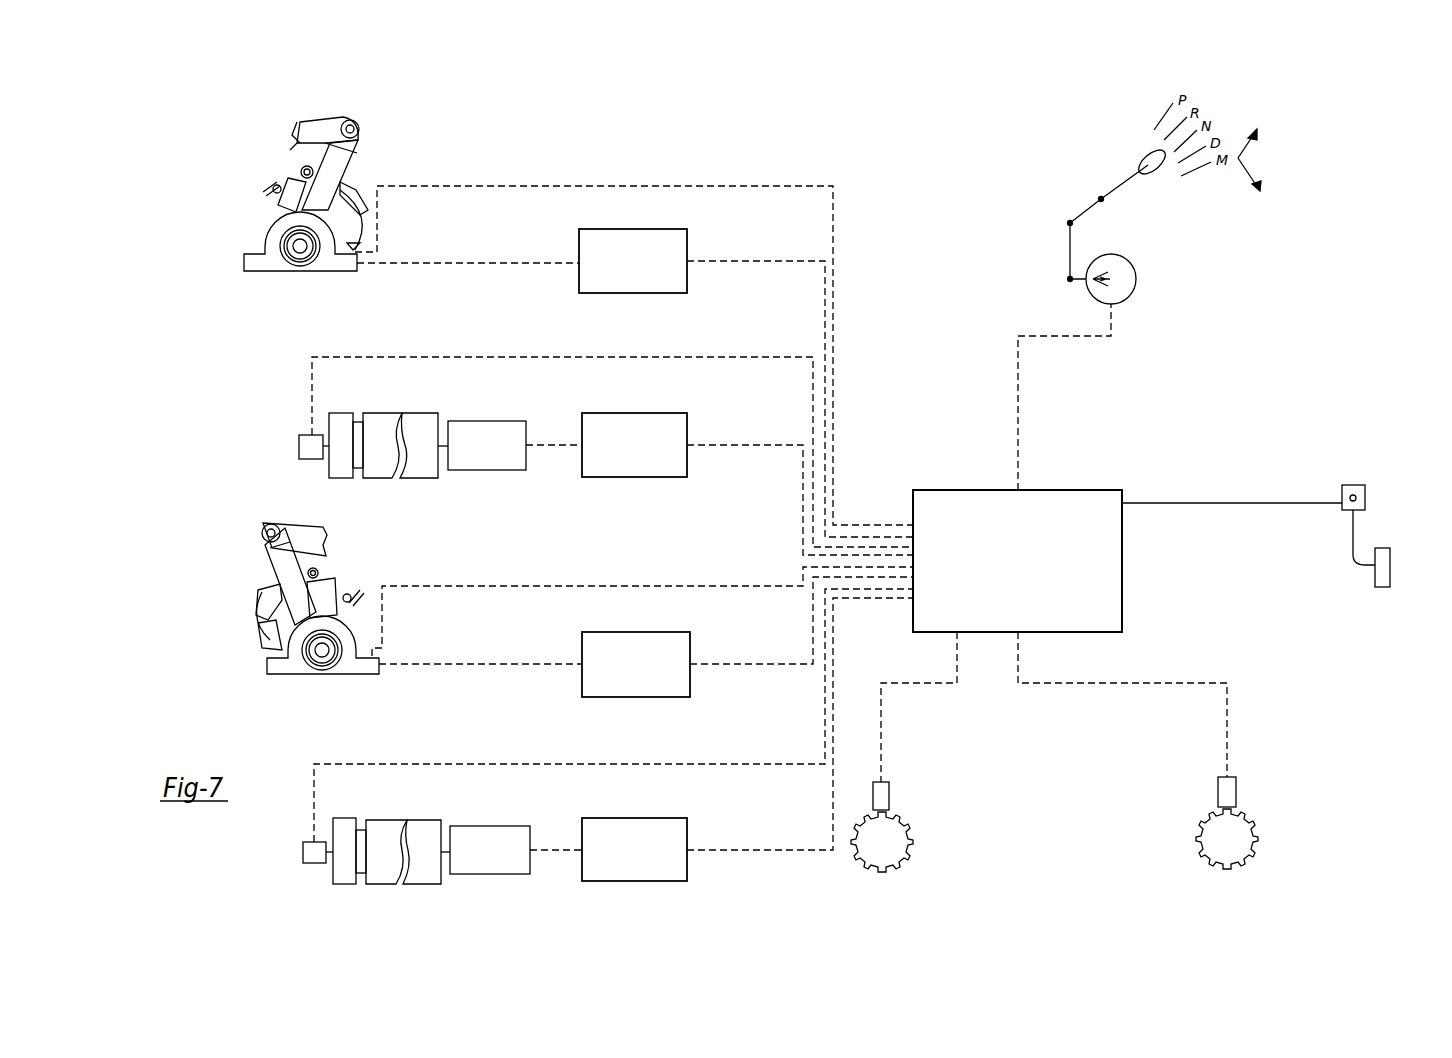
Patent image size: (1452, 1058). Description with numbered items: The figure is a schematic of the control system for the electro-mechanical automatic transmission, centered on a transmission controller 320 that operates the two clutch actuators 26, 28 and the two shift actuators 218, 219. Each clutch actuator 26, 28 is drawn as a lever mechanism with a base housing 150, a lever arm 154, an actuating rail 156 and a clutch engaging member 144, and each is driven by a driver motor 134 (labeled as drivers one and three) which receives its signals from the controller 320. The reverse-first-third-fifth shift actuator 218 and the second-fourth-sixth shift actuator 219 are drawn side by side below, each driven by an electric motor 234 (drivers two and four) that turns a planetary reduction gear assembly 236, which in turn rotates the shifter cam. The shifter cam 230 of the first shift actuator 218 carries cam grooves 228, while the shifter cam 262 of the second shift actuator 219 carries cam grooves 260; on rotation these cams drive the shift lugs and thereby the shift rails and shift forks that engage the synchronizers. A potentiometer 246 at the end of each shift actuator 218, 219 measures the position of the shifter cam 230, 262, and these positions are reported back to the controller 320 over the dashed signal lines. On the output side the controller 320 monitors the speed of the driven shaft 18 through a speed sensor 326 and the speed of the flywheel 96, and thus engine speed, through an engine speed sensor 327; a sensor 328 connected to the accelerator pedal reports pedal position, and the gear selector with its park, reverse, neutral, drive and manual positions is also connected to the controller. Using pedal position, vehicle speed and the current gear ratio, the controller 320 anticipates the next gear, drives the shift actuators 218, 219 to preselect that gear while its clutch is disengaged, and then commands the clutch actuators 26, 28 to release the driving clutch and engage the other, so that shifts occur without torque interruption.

The clutch actuator 26 is at (272, 174).
The clutch actuator 28 is at (247, 622).
The housing bracket 150 is at (298, 194).
The lever arm 154 is at (340, 167).
The shift rail 156 is at (323, 133).
The clutch actuator 144 is at (215, 578).
The driver motor 134 is at (661, 241).
The electric motor 234 is at (657, 416).
The R-1-3-5 shift actuator 218 is at (434, 445).
The 2-4-6 shift actuator 219 is at (444, 849).
The cam grooves 228 is at (352, 417).
The shifter cam 230 is at (422, 468).
The cam grooves 260 is at (355, 818).
The shifter cam 262 is at (418, 876).
The planetary reduction gear assembly 236 is at (505, 432).
The potentiometer 246 is at (304, 447).
The transmission controller 320 is at (1104, 512).
The sensor 328 is at (1365, 498).
The engine speed sensor 327 is at (885, 796).
The speed sensor 326 is at (1230, 796).
The flywheel 96 is at (885, 843).
The driven shaft 18 is at (1232, 838).